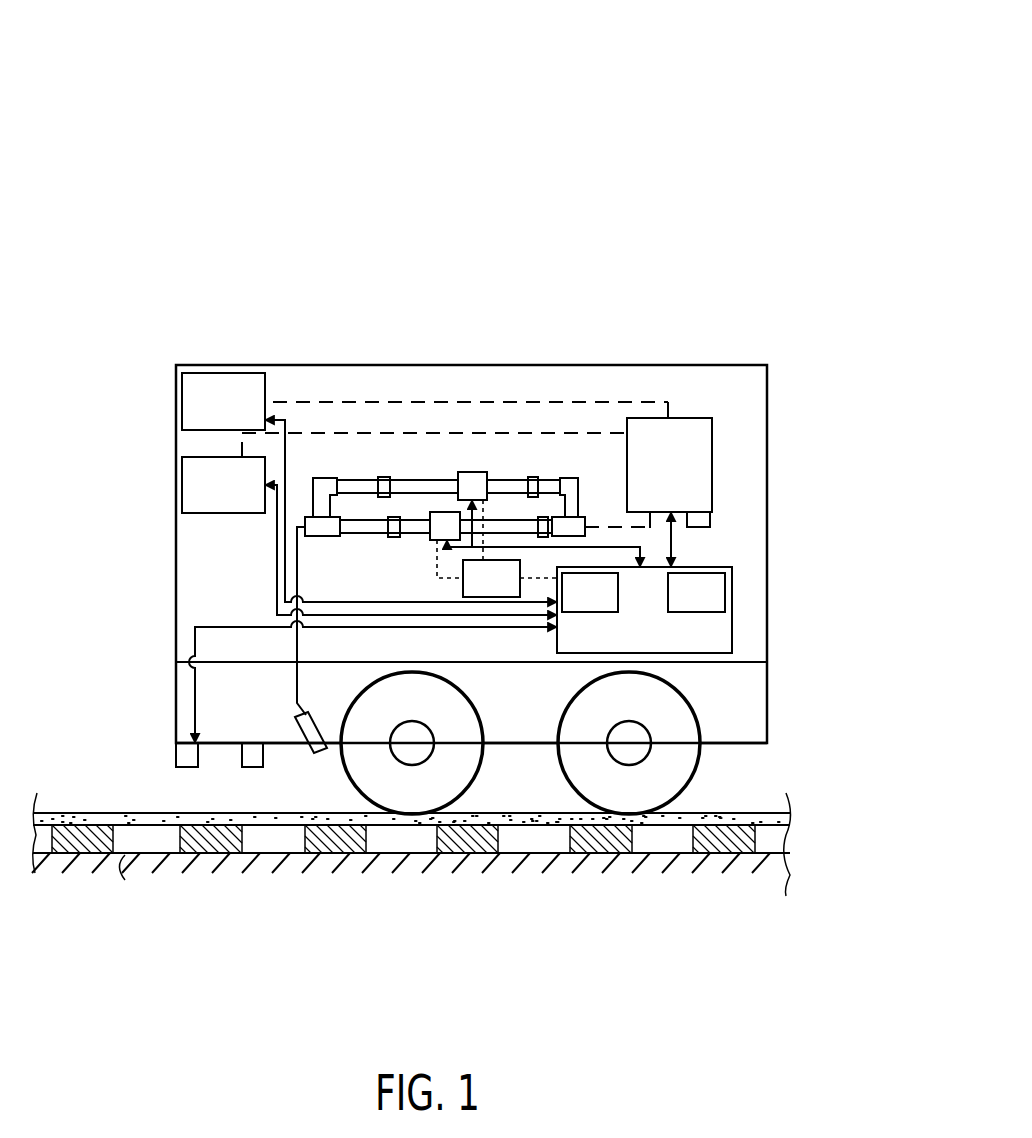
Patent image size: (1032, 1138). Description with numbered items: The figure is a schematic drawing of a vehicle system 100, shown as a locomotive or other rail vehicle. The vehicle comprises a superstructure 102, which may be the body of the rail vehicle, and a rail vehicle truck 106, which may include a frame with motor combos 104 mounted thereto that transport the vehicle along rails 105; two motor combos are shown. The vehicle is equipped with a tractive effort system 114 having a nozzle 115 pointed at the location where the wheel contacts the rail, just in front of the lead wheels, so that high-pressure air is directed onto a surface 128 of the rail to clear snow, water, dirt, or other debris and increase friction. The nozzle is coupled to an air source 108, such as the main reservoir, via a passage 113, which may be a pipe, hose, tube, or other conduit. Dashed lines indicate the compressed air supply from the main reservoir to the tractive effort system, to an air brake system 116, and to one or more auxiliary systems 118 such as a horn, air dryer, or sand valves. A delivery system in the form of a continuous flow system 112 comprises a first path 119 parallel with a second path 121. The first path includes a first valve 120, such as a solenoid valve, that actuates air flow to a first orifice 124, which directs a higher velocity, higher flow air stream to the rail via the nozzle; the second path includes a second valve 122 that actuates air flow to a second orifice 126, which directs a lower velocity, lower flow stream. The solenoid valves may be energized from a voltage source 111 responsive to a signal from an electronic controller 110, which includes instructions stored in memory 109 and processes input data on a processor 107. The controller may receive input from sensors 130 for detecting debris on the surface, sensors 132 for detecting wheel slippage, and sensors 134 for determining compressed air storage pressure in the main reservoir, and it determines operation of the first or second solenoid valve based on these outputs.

The vehicle system 100 is at (870, 58).
The superstructure 102 is at (723, 365).
The motor combos 104 is at (580, 772).
The rails 105 is at (756, 788).
The rail vehicle truck 106 is at (780, 690).
The processor 107 is at (712, 605).
The air source 108 is at (685, 482).
The memory 109 is at (606, 605).
The electronic controller 110 is at (656, 639).
The voltage source 111 is at (507, 591).
The continuous flow system 112 is at (563, 458).
The passage 113 is at (301, 655).
The tractive effort system 114 is at (279, 696).
The nozzle 115 is at (326, 754).
The air brake system 116 is at (223, 477).
The auxiliary system 118 is at (223, 401).
The first path 119 is at (501, 478).
The first valve 120 is at (463, 472).
The second path 121 is at (491, 520).
The second valve 122 is at (433, 545).
The first orifice 124 is at (384, 477).
The second orifice 126 is at (394, 537).
The surface 128 is at (108, 812).
The sensors 130 is at (176, 767).
The sensors 132 is at (242, 767).
The sensors 134 is at (693, 527).